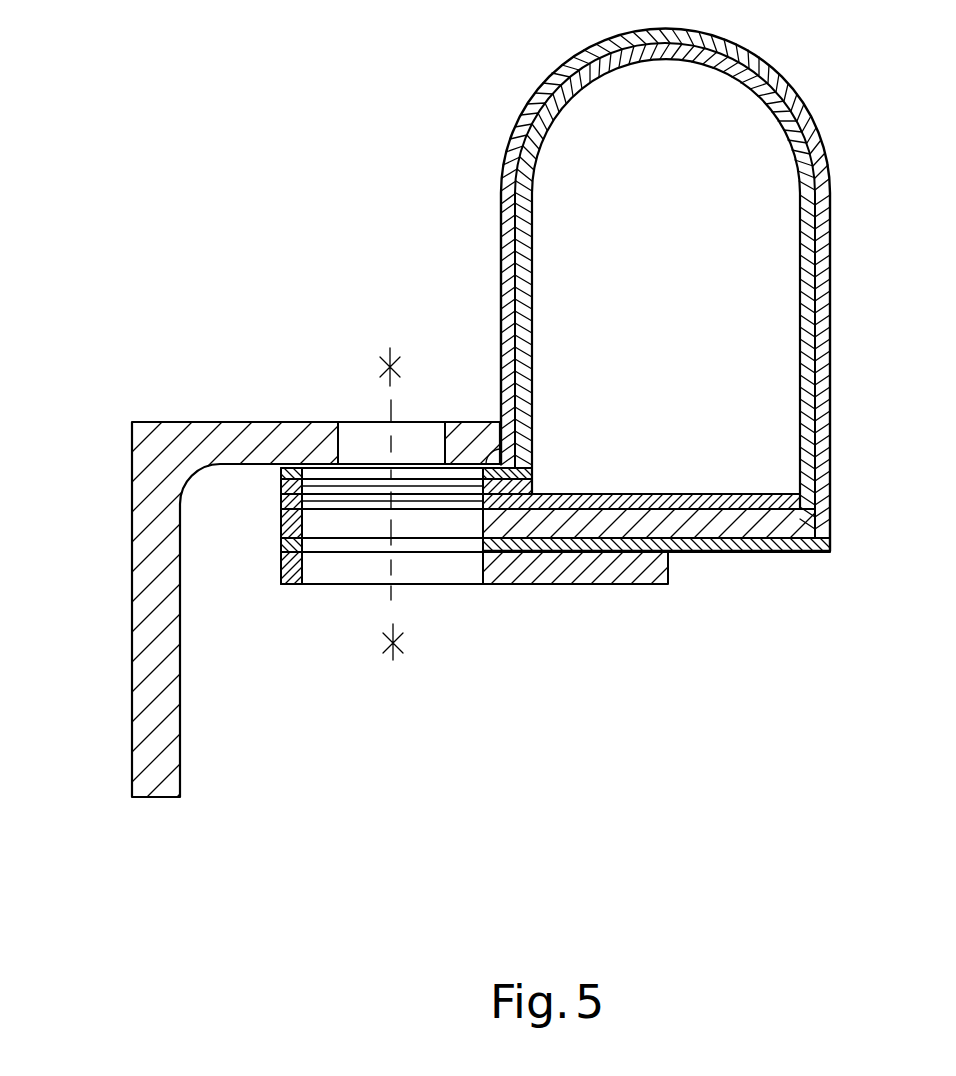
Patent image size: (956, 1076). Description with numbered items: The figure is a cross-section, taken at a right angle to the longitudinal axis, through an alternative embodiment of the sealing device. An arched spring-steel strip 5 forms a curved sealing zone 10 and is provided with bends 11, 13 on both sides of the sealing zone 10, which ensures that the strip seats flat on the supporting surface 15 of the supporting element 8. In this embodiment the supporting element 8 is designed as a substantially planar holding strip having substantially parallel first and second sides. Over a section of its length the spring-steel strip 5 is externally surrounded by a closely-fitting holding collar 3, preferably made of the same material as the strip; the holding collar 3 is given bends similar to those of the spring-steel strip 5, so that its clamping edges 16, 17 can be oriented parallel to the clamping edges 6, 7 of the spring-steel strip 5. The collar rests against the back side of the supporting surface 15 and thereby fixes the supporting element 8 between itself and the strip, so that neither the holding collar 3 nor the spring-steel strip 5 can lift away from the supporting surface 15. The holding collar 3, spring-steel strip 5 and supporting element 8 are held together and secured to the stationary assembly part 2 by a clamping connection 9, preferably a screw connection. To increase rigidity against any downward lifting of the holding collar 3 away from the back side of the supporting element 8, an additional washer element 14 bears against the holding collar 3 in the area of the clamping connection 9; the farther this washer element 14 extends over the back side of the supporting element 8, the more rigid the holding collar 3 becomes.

The assembly part 2 is at (153, 617).
The holding collar 3 is at (737, 52).
The spring-steel strip 5 is at (765, 198).
The clamping edge of the spring-steel strip 6 is at (281, 506).
The clamping edge of the spring-steel strip 7 is at (281, 488).
The supporting element 8 is at (748, 523).
The clamping connection 9 is at (393, 598).
The sealing zone 10 is at (658, 57).
The bend of the spring-steel strip 11 is at (527, 477).
The bend of the spring-steel strip 13 is at (798, 490).
The washer element 14 is at (585, 583).
The supporting surface 15 is at (607, 510).
The clamping edge of the holding collar 16 is at (281, 470).
The clamping edge of the holding collar 17 is at (700, 553).